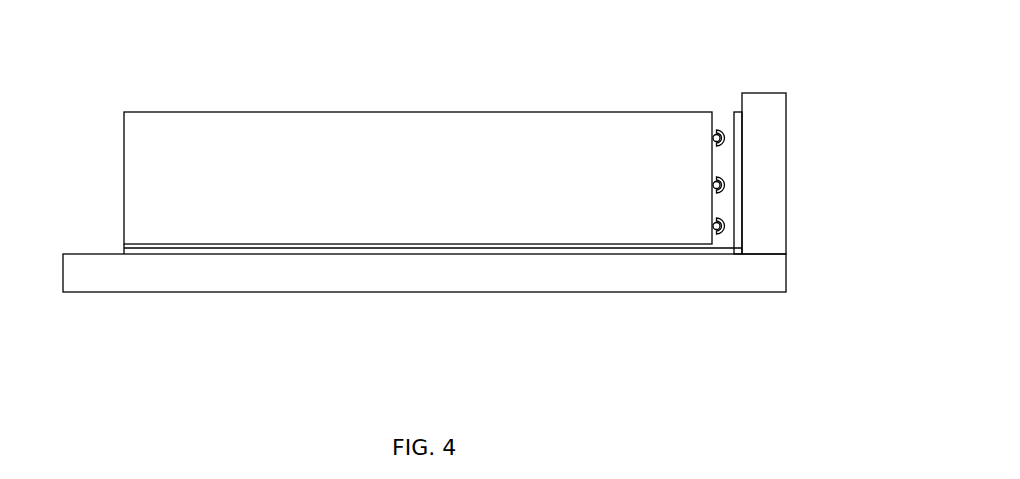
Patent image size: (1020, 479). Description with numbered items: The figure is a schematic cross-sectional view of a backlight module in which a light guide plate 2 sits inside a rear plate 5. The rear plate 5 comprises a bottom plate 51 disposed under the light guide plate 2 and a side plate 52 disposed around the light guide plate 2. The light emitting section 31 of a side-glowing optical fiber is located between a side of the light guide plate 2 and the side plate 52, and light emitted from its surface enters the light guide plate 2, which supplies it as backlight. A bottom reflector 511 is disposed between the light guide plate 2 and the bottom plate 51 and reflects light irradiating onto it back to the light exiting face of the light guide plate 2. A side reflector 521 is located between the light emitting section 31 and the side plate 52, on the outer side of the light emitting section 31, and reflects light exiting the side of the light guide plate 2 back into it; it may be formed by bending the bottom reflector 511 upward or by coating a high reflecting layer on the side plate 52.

The light guide plate 2 is at (673, 128).
The light emitting section 31 is at (728, 138).
The rear plate 5 is at (469, 222).
The bottom plate 51 is at (710, 279).
The bottom reflector 511 is at (639, 253).
The side plate 52 is at (766, 224).
The side reflector 521 is at (738, 196).